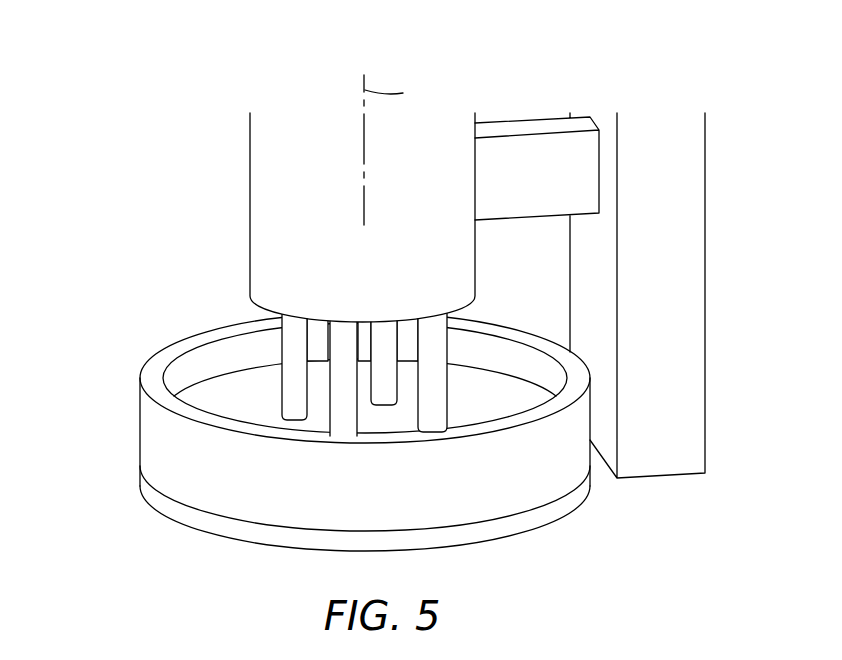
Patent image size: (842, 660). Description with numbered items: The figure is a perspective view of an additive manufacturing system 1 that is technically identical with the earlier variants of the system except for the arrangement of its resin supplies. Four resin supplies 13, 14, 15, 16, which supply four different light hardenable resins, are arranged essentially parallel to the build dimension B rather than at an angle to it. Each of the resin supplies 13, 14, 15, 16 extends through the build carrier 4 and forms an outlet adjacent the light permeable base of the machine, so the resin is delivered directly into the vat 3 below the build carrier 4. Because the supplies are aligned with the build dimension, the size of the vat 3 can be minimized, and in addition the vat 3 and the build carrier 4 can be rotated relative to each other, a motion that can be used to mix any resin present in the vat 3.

The system 1 is at (683, 43).
The vat 3 is at (148, 417).
The build carrier 4 is at (262, 308).
The resin supply 13 is at (293, 350).
The resin supply 14 is at (343, 382).
The resin supply 15 is at (435, 340).
The resin supply 16 is at (390, 385).